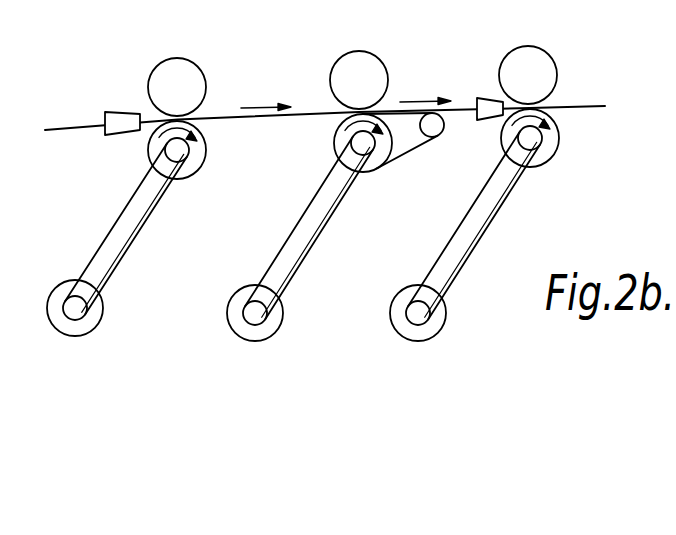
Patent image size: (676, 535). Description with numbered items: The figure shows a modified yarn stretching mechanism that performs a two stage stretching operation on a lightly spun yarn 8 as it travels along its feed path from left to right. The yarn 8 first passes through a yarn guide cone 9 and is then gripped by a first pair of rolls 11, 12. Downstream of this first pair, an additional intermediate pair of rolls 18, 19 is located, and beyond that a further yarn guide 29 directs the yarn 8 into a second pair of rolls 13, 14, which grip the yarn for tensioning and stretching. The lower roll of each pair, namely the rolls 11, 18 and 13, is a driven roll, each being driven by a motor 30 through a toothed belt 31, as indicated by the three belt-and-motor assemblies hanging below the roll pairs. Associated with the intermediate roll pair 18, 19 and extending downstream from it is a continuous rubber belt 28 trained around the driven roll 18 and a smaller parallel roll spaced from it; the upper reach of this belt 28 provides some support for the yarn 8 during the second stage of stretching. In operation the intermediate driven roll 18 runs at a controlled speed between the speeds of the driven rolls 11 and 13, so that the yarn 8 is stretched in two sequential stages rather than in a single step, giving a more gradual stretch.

The yarn 8 is at (305, 110).
The yarn guide cone 9 is at (127, 112).
The first pair roll 11 is at (197, 165).
The first pair roll 12 is at (185, 82).
The second pair roll 13 is at (556, 144).
The second pair roll 14 is at (540, 75).
The intermediate driven roll 18 is at (336, 143).
The intermediate roll 19 is at (370, 80).
The continuous rubber belt 28 is at (428, 138).
The yarn guide 29 is at (487, 97).
The motor 30 is at (98, 316).
The toothed belt 31 is at (140, 239).